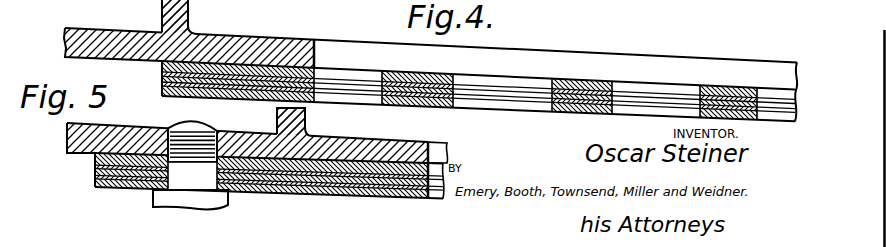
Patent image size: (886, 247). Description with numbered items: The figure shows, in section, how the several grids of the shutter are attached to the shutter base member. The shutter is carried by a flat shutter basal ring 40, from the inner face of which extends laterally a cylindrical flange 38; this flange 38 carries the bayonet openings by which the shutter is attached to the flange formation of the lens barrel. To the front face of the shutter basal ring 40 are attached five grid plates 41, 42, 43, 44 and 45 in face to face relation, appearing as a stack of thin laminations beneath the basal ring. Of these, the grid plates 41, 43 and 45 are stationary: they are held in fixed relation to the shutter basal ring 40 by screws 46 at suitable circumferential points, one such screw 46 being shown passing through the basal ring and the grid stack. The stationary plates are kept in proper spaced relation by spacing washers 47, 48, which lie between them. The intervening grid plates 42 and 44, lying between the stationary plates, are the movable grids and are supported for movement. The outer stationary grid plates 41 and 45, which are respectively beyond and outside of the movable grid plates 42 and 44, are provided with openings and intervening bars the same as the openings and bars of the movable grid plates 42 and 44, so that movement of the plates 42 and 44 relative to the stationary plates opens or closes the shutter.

In FIG. 4, the cylindrical flange 38 is at (182, 6).
In FIG. 5, the cylindrical flange 38 is at (303, 118).
In FIG. 4, the shutter basal ring 40 is at (262, 47).
In FIG. 4, the grid plate 41 is at (315, 68).
In FIG. 5, the grid plate 41 is at (95, 157).
In FIG. 4, the grid plate 42 is at (473, 88).
In FIG. 5, the grid plate 42 is at (378, 175).
In FIG. 4, the grid plate 43 is at (653, 100).
In FIG. 5, the grid plate 43 is at (97, 170).
In FIG. 4, the grid plate 44 is at (477, 98).
In FIG. 5, the grid plate 44 is at (410, 188).
In FIG. 4, the grid plate 45 is at (528, 105).
In FIG. 5, the grid plate 45 is at (112, 183).
In FIG. 5, the screw 46 is at (186, 131).
In FIG. 5, the spacing washer 47 is at (153, 189).
In FIG. 5, the spacing washer 48 is at (151, 172).